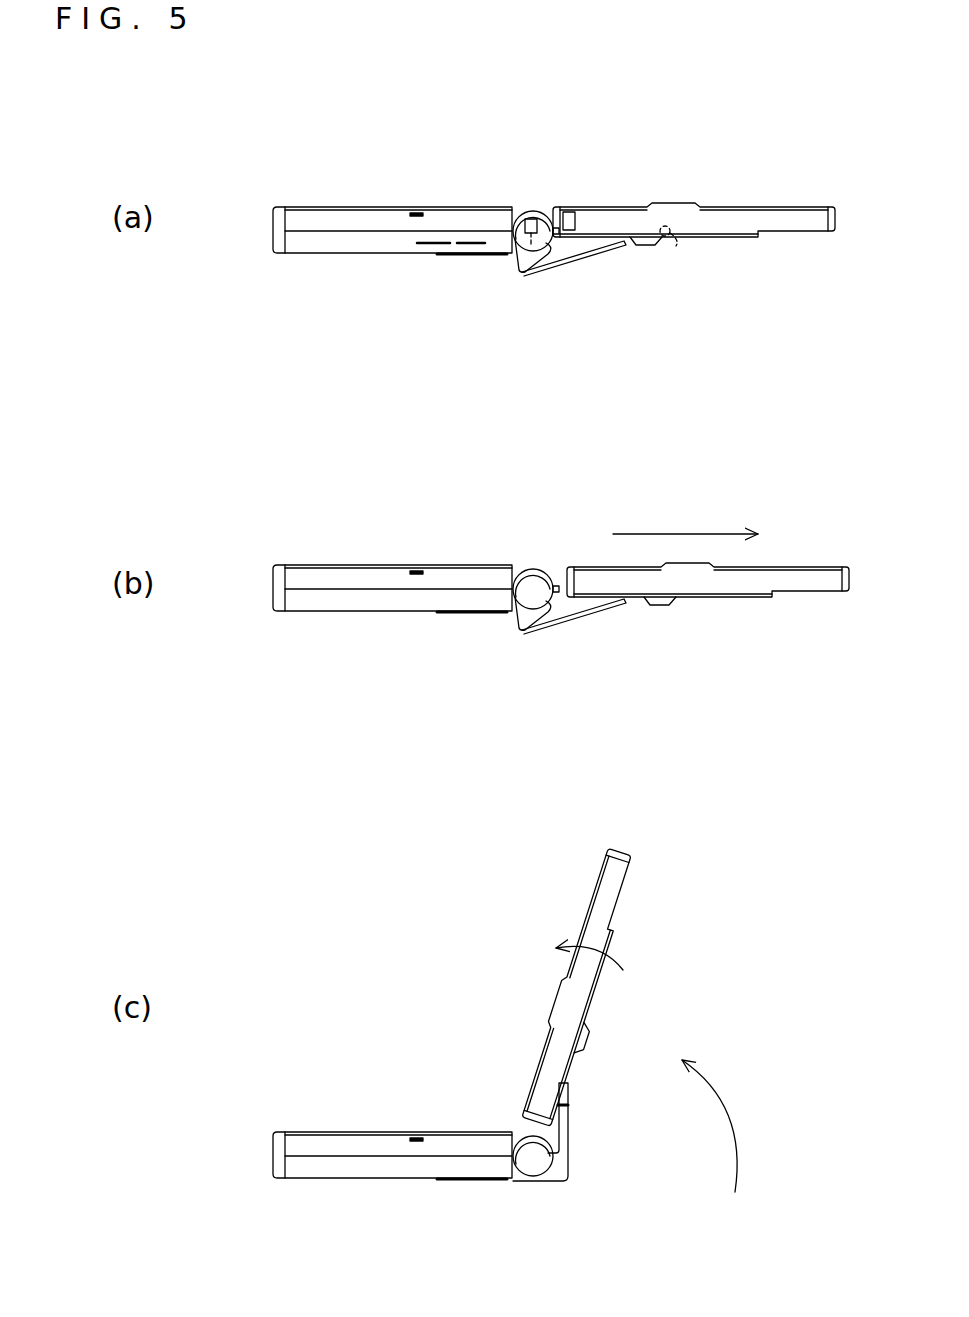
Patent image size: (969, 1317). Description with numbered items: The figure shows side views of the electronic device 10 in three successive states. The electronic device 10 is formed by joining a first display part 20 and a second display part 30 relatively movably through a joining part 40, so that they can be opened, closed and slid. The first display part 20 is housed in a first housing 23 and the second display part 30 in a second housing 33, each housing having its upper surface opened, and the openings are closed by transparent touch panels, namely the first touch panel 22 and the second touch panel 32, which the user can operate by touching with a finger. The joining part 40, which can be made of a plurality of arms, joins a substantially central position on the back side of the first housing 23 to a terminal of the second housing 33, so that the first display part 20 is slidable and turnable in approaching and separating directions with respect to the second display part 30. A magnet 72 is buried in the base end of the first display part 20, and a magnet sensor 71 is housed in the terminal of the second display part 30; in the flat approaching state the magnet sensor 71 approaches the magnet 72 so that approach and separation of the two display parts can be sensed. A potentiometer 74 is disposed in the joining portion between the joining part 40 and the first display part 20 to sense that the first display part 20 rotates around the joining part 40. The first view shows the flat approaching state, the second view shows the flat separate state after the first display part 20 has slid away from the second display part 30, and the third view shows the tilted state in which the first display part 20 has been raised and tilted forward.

The electronic device 10 is at (809, 110).
The first display part 20 is at (749, 196).
The first touch panel 22 is at (604, 206).
The first housing 23 is at (731, 223).
The second display part 30 is at (416, 196).
The second touch panel 32 is at (477, 206).
The second housing 33 is at (331, 253).
The joining part 40 is at (536, 251).
The magnet sensor 71 is at (513, 263).
The magnet 72 is at (572, 264).
The potentiometer 74 is at (676, 246).